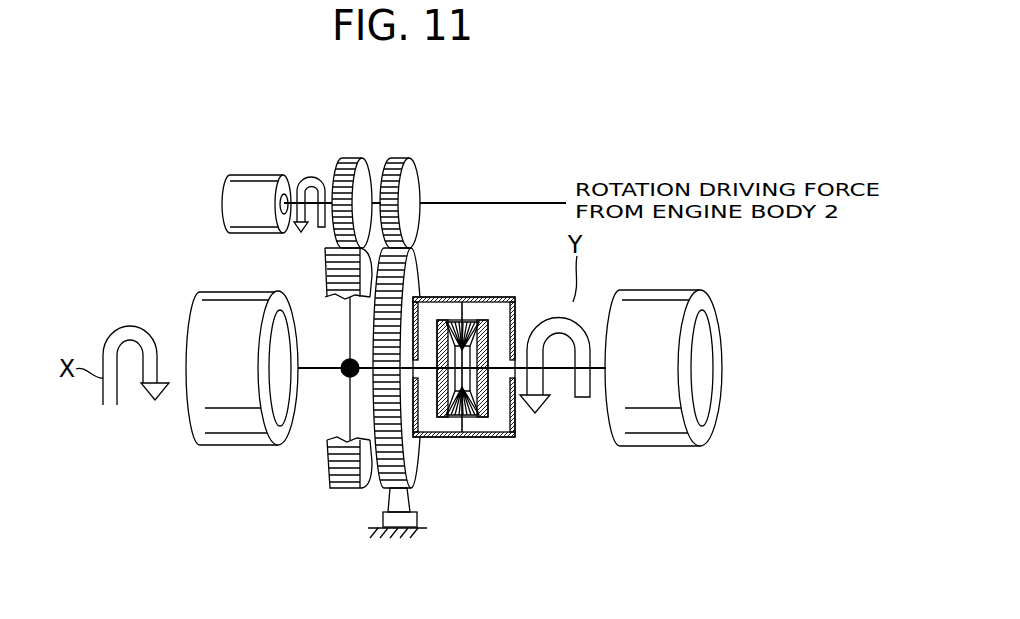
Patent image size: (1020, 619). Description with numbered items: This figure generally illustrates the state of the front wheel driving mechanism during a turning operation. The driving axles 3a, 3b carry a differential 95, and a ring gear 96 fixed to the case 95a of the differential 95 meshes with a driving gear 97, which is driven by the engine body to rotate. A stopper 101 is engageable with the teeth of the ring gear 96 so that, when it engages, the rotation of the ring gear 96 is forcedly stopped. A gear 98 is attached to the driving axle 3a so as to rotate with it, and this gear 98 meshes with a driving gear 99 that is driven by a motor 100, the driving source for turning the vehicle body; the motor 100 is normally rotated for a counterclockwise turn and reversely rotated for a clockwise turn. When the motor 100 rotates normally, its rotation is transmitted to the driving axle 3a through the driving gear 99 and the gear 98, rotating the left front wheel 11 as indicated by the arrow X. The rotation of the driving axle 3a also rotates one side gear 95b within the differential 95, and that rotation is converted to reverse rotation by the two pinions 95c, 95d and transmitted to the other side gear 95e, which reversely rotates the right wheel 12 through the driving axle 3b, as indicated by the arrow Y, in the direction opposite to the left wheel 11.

The driving axle 3a is at (342, 362).
The driving axle 3b is at (594, 360).
The left wheel 11 is at (237, 447).
The right wheel 12 is at (660, 447).
The differential 95 is at (502, 392).
The case 95a is at (517, 422).
The side gear 95b is at (424, 340).
The pinion 95c is at (480, 317).
The pinion 95d is at (473, 443).
The side gear 95e is at (490, 340).
The ring gear 96 is at (420, 468).
The driving gear 97 is at (404, 158).
The gear 98 is at (348, 488).
The driving gear 99 is at (351, 158).
The motor 100 is at (250, 175).
The stopper 101 is at (418, 517).